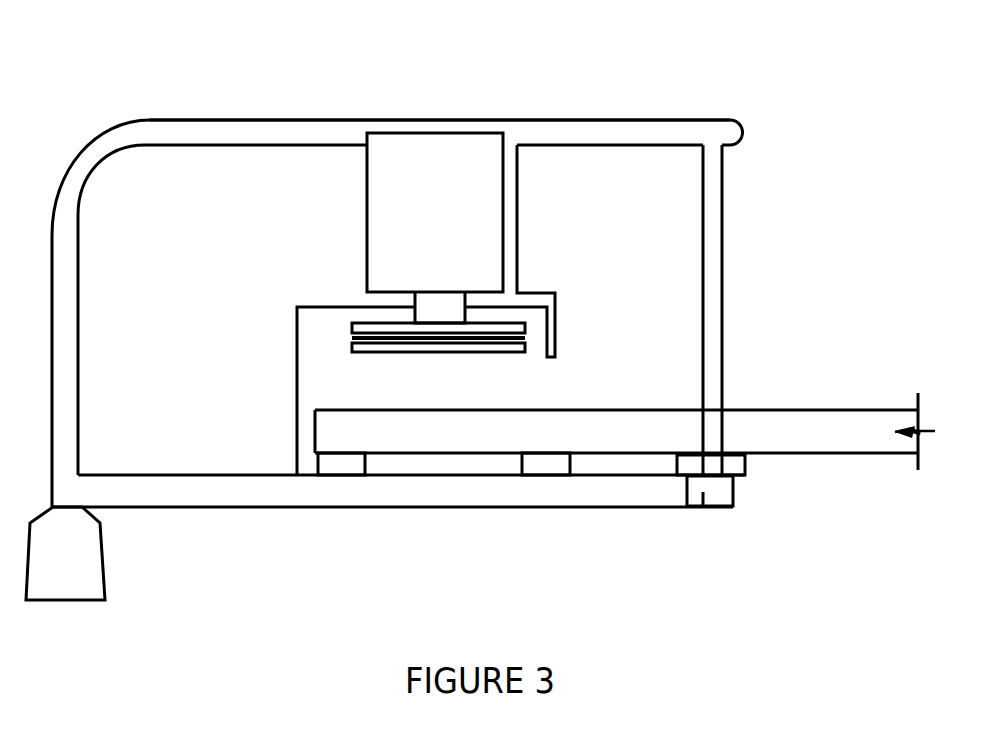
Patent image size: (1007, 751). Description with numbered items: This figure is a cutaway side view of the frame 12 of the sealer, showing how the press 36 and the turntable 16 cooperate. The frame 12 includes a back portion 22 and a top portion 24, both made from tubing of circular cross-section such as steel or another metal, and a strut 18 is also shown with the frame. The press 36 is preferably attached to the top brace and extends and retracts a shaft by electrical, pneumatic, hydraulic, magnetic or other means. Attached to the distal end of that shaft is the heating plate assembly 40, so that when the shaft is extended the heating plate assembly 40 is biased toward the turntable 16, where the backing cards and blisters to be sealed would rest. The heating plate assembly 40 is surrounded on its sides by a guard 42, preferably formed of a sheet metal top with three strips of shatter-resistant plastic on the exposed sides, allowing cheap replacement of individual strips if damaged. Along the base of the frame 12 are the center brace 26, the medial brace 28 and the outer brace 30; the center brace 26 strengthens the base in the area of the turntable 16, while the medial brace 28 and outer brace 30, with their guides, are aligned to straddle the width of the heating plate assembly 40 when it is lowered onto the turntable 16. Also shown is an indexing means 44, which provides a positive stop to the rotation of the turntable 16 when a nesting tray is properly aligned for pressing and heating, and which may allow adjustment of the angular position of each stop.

The frame 12 is at (204, 66).
The turntable 16 is at (777, 435).
The strut 18 is at (712, 352).
The back portion 22 is at (67, 326).
The top portion 24 is at (613, 130).
The center brace 26 is at (702, 507).
The medial brace 28 is at (548, 467).
The outer brace 30 is at (355, 468).
The press 36 is at (450, 170).
The heating plate assembly 40 is at (477, 345).
The guard 42 is at (553, 293).
The indexing means 44 is at (745, 470).